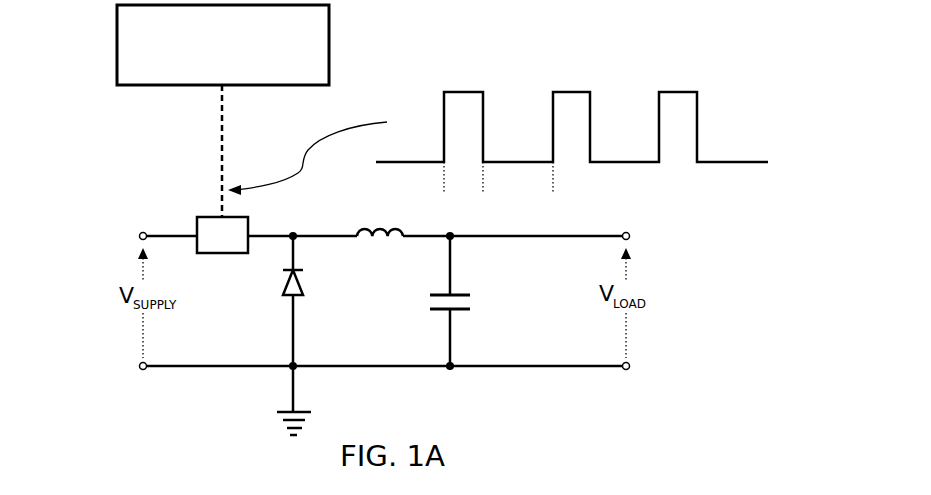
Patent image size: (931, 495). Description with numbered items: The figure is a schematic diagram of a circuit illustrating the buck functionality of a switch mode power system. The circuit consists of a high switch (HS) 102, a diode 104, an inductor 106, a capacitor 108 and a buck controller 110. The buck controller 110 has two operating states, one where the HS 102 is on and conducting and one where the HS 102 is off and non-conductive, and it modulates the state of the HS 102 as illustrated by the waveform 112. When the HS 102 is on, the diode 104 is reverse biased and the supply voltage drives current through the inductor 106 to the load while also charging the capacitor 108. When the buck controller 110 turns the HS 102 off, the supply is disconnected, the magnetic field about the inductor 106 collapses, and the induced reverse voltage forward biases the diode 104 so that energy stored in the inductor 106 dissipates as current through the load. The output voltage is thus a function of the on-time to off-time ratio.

The buck controller 110 is at (130, 42).
The high switch (HS) 102 is at (197, 230).
The diode 104 is at (287, 282).
The inductor 106 is at (394, 248).
The capacitor 108 is at (478, 305).
The waveform 112 is at (719, 107).